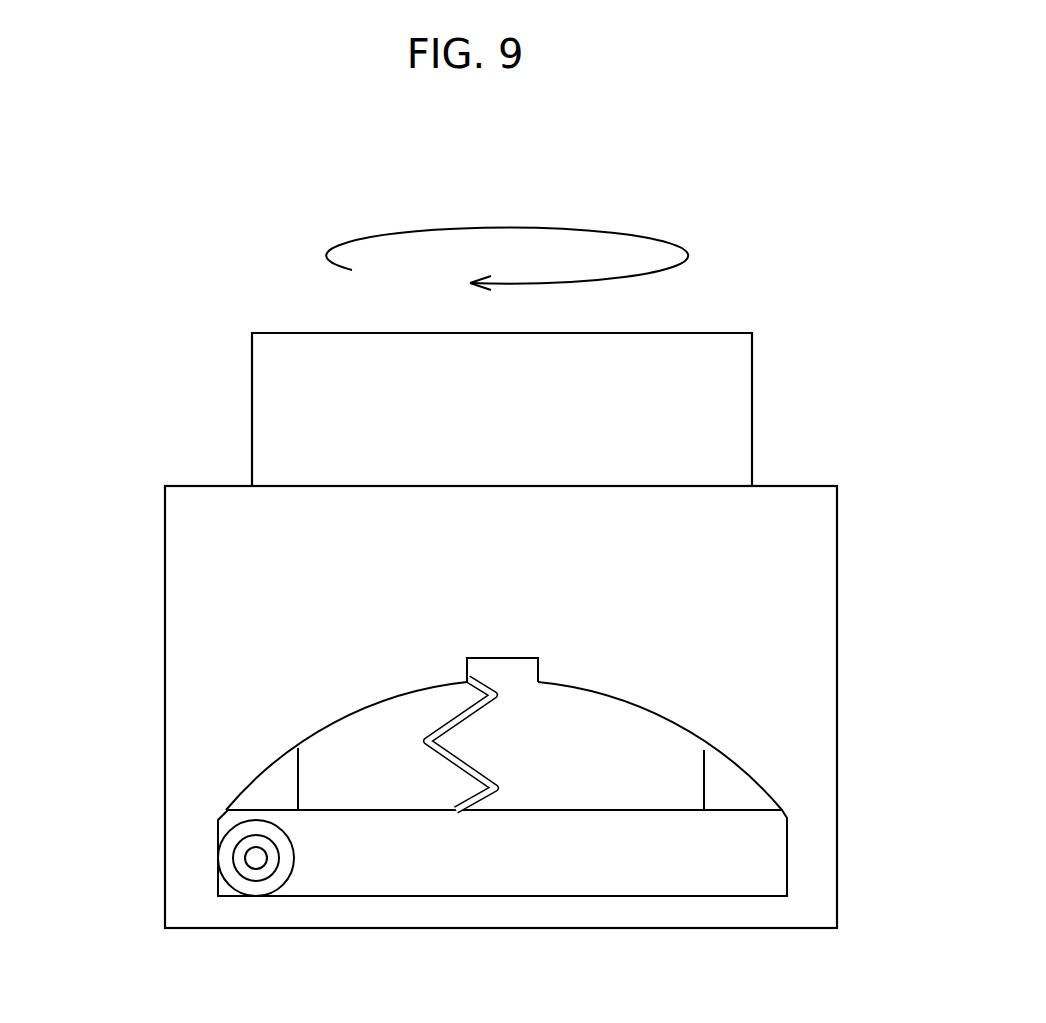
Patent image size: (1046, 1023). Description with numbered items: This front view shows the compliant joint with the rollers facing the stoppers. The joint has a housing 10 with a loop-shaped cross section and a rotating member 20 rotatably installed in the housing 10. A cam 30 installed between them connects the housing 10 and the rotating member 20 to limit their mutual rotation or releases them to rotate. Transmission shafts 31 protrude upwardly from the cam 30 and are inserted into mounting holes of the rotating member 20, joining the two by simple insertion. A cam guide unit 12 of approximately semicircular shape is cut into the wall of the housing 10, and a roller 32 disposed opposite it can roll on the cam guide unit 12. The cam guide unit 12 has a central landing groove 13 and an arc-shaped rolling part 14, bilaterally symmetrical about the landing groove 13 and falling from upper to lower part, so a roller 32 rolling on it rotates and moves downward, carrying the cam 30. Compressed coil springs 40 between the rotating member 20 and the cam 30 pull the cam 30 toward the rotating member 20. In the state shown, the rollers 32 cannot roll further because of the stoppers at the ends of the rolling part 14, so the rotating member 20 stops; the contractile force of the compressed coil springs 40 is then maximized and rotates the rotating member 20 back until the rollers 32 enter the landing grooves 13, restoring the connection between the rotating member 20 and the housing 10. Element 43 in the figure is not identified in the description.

The housing 10 is at (825, 551).
The rotating member 20 is at (730, 412).
The cam guide unit 12 is at (105, 620).
The landing groove 13 is at (468, 658).
The rolling part 14 is at (298, 748).
The roller 43 is at (220, 852).
The cam 30 is at (326, 895).
The transmission shaft 31 is at (287, 785).
The roller 32 is at (258, 885).
The compressed coil spring 40 is at (472, 802).